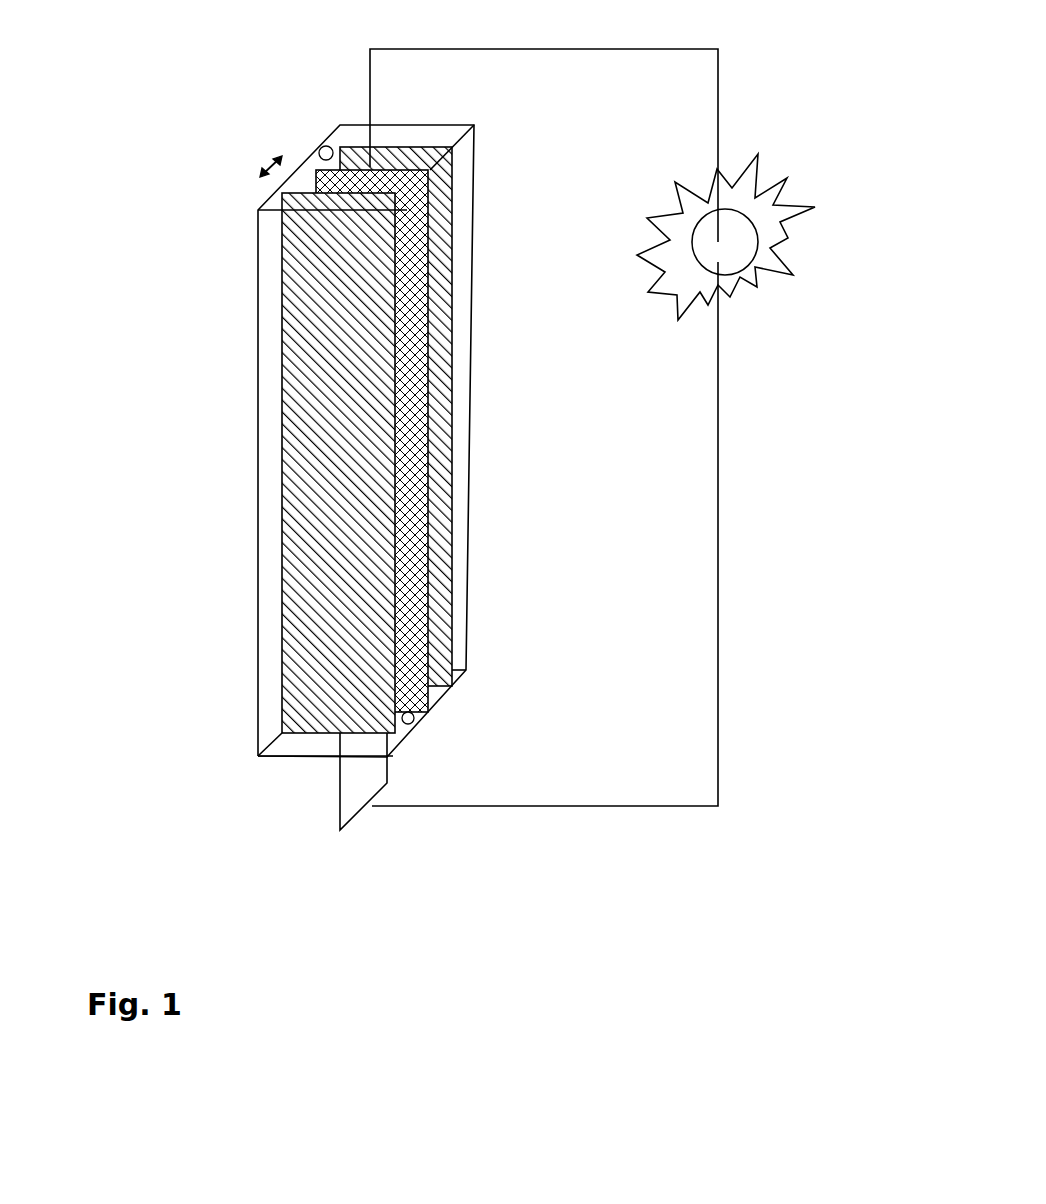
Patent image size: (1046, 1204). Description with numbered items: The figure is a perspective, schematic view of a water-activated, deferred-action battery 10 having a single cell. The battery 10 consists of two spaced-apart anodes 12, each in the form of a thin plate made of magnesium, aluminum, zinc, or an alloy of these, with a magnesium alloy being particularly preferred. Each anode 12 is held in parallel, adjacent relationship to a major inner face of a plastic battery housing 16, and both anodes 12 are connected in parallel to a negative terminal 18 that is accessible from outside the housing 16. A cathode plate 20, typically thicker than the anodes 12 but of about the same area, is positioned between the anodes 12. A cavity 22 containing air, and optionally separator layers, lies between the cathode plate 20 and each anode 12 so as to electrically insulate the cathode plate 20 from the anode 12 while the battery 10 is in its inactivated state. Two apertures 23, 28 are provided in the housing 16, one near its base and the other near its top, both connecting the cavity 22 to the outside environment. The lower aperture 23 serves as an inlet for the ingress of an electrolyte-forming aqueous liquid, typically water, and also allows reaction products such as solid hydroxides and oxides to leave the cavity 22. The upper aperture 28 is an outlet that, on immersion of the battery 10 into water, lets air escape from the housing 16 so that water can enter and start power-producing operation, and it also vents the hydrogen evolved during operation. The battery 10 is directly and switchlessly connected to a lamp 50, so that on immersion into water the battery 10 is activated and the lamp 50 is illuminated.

The battery 10 is at (230, 325).
The anode 12 is at (318, 583).
The battery housing 16 is at (253, 687).
The negative terminal 18 is at (372, 808).
The cathode plate 20 is at (413, 558).
The cavity 22 is at (262, 161).
The aperture 23 is at (412, 720).
The aperture 28 is at (322, 148).
The lamp 50 is at (745, 232).